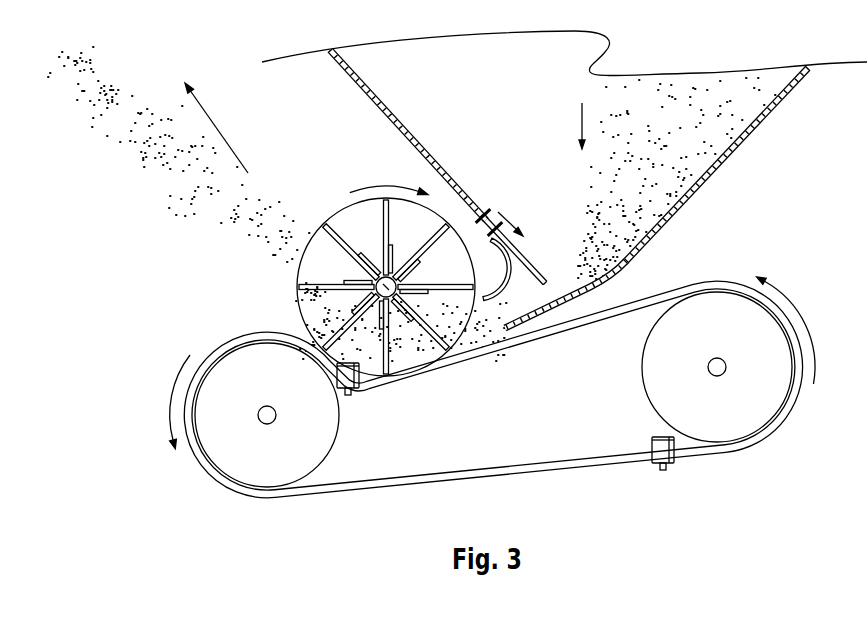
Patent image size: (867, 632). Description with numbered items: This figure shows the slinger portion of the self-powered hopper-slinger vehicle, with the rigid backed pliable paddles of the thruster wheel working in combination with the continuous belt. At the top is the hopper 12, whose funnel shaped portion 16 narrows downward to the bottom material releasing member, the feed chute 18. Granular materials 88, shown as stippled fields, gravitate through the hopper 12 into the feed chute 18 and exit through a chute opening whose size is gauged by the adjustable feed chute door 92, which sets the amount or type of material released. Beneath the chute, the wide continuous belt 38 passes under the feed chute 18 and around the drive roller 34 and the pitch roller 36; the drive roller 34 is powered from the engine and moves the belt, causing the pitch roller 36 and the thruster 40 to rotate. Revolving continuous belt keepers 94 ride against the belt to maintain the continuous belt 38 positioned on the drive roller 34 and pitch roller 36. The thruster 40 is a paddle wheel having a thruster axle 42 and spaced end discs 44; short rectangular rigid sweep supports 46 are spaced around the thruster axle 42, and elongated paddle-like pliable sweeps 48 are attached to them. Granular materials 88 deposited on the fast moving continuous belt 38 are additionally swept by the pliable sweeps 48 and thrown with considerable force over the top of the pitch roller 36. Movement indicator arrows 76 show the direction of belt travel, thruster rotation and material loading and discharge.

The hopper 12 is at (375, 71).
The funnel shaped portion 16 is at (383, 117).
The feed chute 18 is at (545, 315).
The drive roller 34 is at (760, 407).
The pitch roller 36 is at (253, 455).
The continuous belt 38 is at (377, 483).
The thruster 40 is at (344, 310).
The thruster axle 42 is at (411, 306).
The spaced end discs 44 is at (330, 299).
The rigid sweep supports 46 is at (371, 265).
The pliable sweeps 48 is at (328, 229).
The movement indicator arrows 76 is at (363, 183).
The granular materials 88 is at (102, 118).
The adjustable feed chute door 92 is at (531, 258).
The continuous belt keepers 94 is at (366, 386).